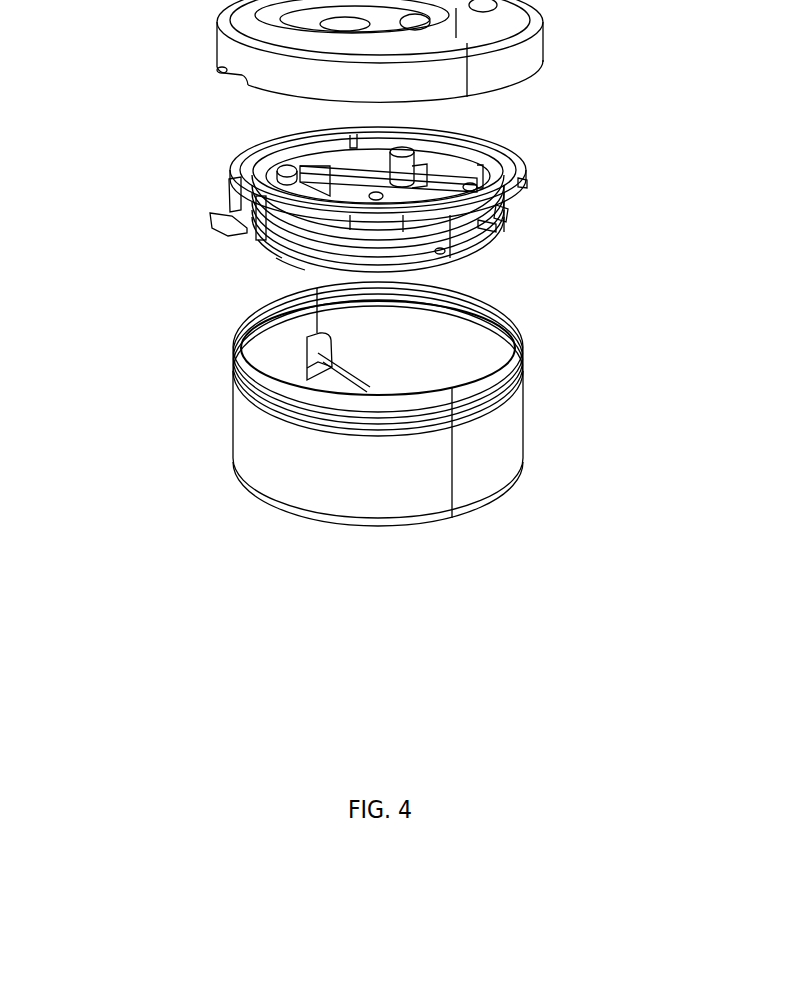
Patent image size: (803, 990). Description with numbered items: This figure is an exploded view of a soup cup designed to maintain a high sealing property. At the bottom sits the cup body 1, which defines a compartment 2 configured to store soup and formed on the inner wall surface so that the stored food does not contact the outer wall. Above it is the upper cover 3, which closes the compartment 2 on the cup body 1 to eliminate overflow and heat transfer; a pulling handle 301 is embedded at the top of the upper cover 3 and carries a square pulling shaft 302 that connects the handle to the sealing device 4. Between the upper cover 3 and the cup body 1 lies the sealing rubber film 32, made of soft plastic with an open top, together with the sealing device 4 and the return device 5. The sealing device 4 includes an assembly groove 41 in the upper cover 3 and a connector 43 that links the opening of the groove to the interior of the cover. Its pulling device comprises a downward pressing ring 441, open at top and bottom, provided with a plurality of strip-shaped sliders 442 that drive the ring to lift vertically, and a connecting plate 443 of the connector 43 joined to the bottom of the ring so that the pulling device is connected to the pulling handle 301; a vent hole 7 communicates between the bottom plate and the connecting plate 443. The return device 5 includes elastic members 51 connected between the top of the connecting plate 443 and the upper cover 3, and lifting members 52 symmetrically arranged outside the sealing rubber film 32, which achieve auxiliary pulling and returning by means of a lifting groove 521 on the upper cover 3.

The cup body 1 is at (493, 467).
The compartment 2 is at (312, 352).
The upper cover 3 is at (216, 46).
The pulling handle 301 is at (440, 30).
The pulling shaft 302 is at (415, 30).
The sealing rubber film 32 is at (228, 177).
The sealing device 4 is at (462, 228).
The assembly groove 41 is at (425, 35).
The connector 43 is at (280, 260).
The downward pressing ring 441 is at (517, 212).
The strip-shaped slider 442 is at (512, 185).
The connecting plate 443 is at (258, 247).
The return device 5 is at (279, 164).
The elastic member 51 is at (492, 225).
The lifting member 52 is at (217, 230).
The lifting groove 521 is at (238, 80).
The vent hole 7 is at (441, 253).